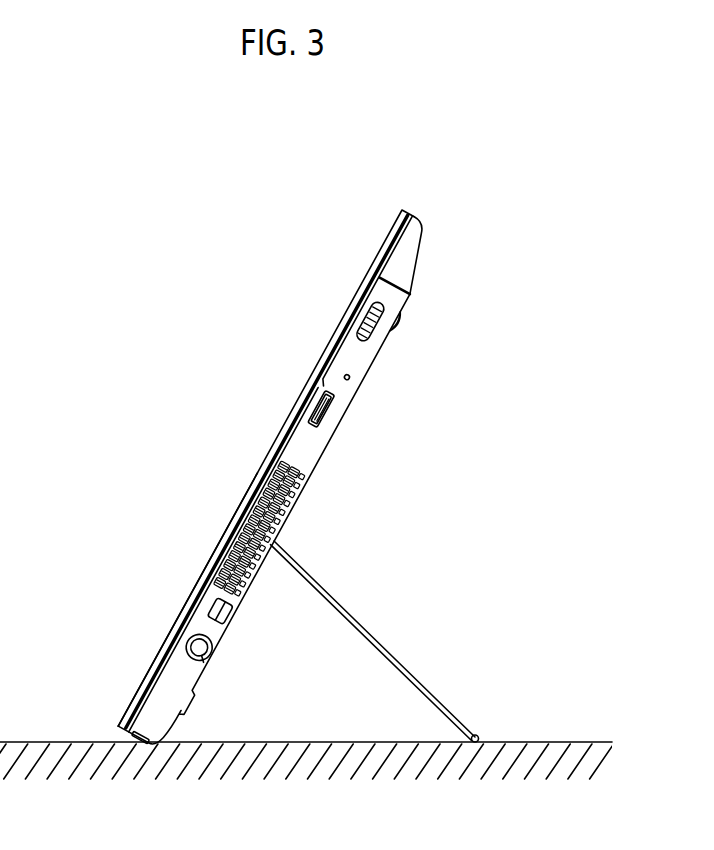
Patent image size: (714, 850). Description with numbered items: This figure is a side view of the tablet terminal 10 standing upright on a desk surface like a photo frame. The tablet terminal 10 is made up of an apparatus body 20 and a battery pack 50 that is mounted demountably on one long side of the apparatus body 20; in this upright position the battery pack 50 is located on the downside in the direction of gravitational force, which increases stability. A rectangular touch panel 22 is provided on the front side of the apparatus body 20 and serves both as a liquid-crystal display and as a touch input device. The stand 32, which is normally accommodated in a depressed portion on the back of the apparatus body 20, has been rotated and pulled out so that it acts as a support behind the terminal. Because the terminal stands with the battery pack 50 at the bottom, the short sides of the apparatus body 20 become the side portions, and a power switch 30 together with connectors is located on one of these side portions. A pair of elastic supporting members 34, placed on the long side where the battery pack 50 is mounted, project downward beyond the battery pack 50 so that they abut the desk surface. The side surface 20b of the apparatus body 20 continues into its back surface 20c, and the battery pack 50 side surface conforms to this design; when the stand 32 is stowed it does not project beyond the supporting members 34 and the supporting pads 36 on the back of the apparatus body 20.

The tablet terminal 10 is at (277, 224).
The apparatus body 20 is at (370, 414).
The side surface of the apparatus body 20b is at (308, 449).
The back surface of the apparatus body 20c is at (243, 602).
The touch panel 22 is at (257, 424).
The power switch 30 is at (372, 329).
The stand 32 is at (411, 671).
The supporting members 34 is at (147, 743).
The supporting pads 36 is at (398, 332).
The battery pack 50 is at (122, 659).